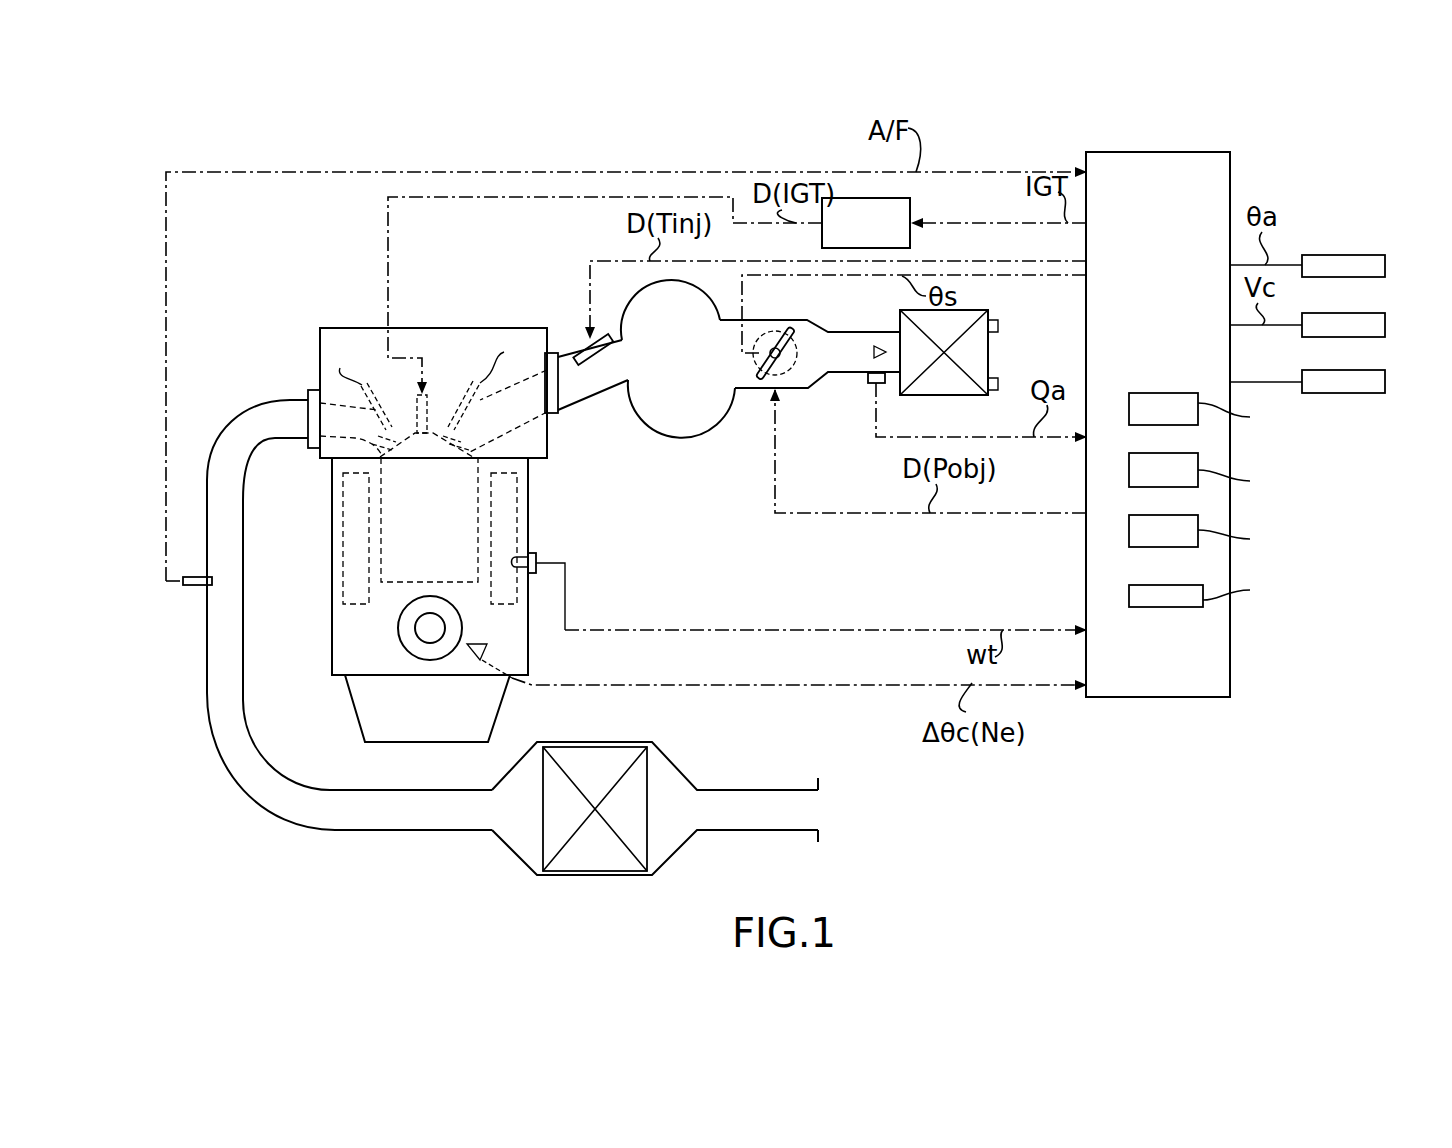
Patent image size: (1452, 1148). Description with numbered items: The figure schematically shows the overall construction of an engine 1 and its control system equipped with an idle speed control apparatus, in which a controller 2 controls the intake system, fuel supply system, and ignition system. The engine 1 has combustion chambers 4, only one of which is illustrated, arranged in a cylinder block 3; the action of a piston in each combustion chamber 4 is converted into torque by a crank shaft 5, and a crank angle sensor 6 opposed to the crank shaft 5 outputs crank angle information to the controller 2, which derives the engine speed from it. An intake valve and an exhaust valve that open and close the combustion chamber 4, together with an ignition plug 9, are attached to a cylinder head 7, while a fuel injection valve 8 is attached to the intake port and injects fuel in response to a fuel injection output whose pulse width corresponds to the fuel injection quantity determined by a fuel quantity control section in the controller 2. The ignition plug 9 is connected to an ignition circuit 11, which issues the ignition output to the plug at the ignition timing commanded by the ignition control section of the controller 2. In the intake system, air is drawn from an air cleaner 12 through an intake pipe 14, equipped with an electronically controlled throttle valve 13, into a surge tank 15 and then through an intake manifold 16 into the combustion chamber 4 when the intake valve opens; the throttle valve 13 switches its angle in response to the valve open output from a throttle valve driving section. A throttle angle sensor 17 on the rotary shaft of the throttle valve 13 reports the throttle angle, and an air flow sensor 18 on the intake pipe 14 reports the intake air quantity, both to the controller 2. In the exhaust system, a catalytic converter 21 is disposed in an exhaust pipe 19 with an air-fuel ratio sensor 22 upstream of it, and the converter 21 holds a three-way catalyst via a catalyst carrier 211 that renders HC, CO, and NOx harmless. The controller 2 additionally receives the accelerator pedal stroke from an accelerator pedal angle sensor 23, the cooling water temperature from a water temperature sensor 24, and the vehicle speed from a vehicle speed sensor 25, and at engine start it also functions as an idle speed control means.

The engine 1 is at (292, 160).
The controller 2 is at (1190, 152).
The cylinder block 3 is at (332, 507).
The combustion chamber 4 is at (406, 572).
The crank shaft 5 is at (422, 636).
The crank angle sensor 6 is at (476, 650).
The cylinder head 7 is at (358, 328).
The fuel injection valve 8 is at (580, 350).
The ignition plug 9 is at (414, 412).
The ignition circuit 11 is at (910, 210).
The air cleaner 12 is at (980, 308).
The electronically controlled throttle valve 13 is at (750, 368).
The intake pipe 14 is at (822, 320).
The surge tank 15 is at (690, 322).
The intake manifold 16 is at (600, 395).
The throttle angle sensor 17 is at (778, 330).
The air flow sensor 18 is at (874, 384).
The exhaust pipe 19 is at (207, 708).
The catalytic converter 21 is at (516, 858).
The catalyst carrier 211 is at (648, 830).
The air-fuel ratio sensor 22 is at (198, 586).
The accelerator pedal angle sensor 23 is at (1346, 255).
The water temperature sensor 24 is at (540, 556).
The vehicle speed sensor 25 is at (1344, 315).